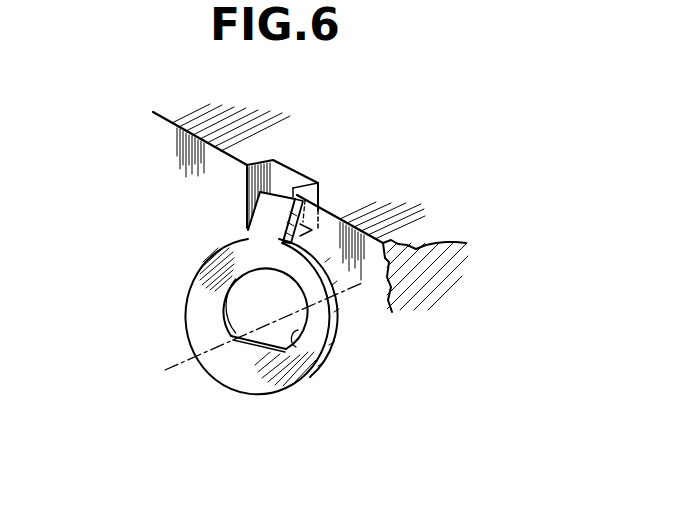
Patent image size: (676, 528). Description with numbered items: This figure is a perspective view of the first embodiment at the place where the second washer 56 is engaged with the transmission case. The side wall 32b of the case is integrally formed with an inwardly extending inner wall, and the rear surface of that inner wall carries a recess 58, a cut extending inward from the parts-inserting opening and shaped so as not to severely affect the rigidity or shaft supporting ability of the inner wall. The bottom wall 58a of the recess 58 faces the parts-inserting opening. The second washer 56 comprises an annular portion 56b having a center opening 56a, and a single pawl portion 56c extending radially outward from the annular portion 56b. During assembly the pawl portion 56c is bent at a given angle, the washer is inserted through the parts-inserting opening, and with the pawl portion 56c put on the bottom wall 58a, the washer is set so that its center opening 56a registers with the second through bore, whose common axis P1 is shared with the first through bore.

The side wall 32b is at (352, 208).
The recess 58 is at (293, 178).
The bottom wall of the recess 58a is at (350, 207).
The second washer 56 is at (335, 320).
The center opening 56a is at (318, 360).
The annular portion 56b is at (202, 300).
The pawl portion 56c is at (267, 218).
The common axis P1 is at (170, 367).